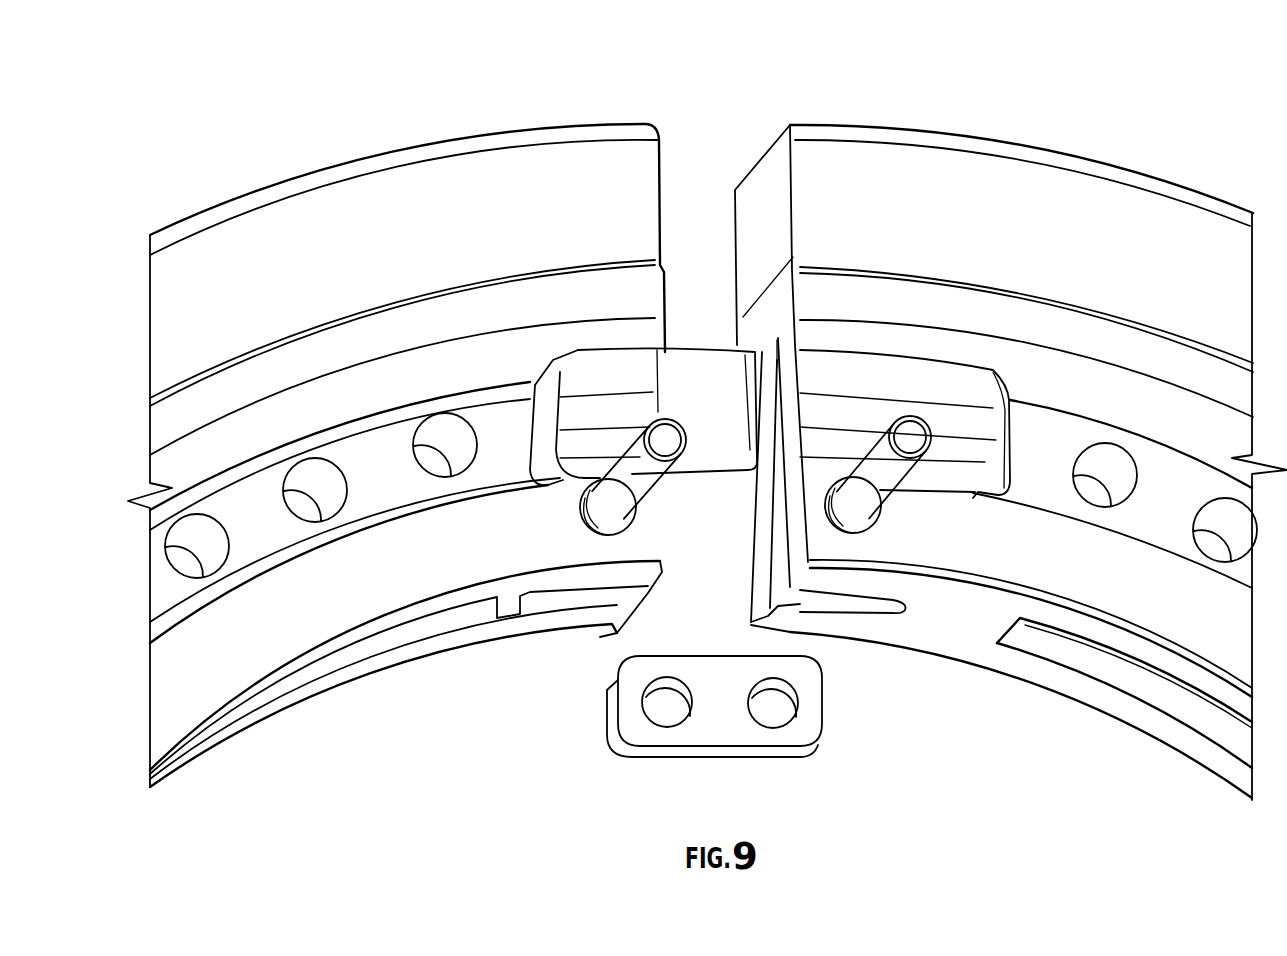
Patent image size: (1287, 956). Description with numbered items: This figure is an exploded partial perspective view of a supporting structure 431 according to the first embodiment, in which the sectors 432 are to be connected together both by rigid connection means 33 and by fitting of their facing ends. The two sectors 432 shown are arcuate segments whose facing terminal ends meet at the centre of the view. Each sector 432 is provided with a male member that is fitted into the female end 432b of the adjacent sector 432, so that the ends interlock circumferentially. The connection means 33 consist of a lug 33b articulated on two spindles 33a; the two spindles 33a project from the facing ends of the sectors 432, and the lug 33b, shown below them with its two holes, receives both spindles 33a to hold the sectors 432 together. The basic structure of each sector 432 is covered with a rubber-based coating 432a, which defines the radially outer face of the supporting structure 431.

The supporting structure 431 is at (317, 146).
The sector 432 is at (518, 122).
The rubber-based coating 432a is at (1031, 223).
The female end 432b is at (757, 430).
The connection means 33 is at (609, 780).
The spindle 33a is at (655, 482).
The lug 33b is at (786, 757).